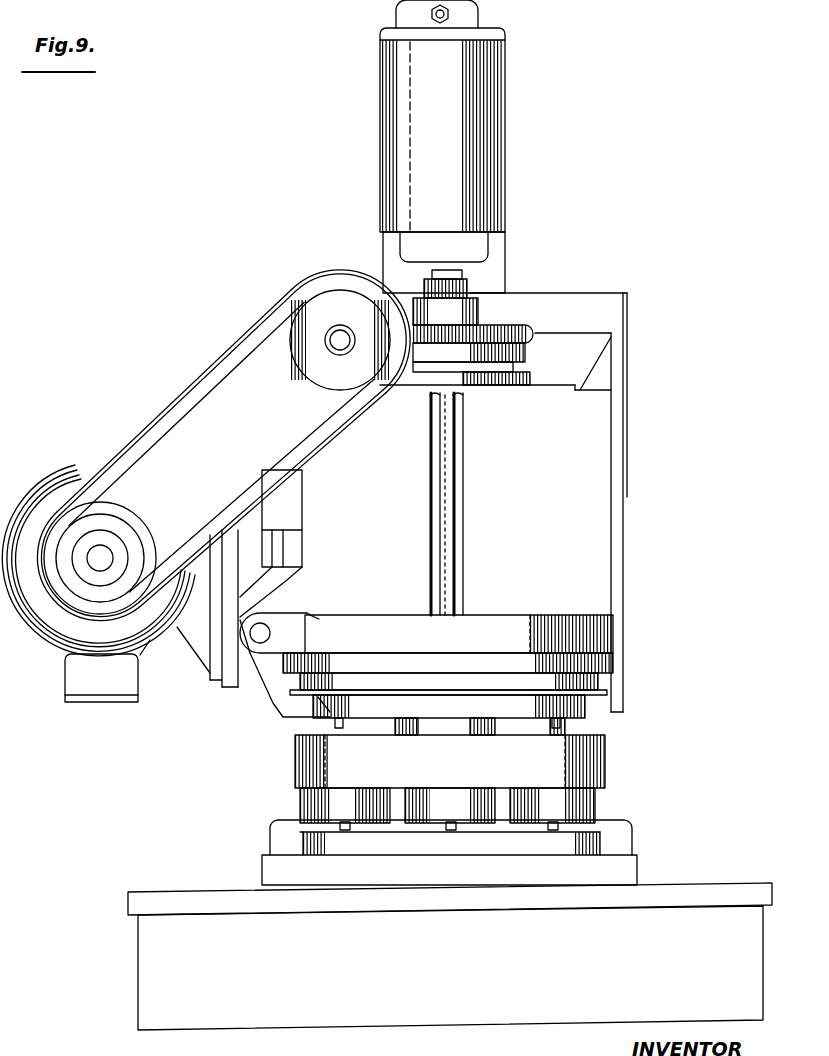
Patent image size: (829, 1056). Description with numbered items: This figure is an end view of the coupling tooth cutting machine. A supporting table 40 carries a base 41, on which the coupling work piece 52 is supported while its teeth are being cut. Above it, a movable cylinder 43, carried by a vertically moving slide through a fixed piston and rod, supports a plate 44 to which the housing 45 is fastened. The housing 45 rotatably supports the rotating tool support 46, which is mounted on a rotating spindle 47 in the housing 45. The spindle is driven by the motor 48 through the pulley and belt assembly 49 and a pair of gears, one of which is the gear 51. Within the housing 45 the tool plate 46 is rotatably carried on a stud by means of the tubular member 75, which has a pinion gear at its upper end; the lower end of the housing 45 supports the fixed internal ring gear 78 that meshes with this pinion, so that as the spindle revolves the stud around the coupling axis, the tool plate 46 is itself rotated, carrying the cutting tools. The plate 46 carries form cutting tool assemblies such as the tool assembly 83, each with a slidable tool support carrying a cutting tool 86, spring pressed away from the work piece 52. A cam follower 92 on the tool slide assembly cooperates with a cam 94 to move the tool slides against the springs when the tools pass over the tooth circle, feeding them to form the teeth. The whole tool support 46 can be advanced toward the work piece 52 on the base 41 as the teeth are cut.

The supporting table 40 is at (155, 995).
The base 41 is at (270, 873).
The movable cylinder 43 is at (497, 135).
The plate 44 is at (610, 307).
The housing 45 is at (595, 530).
The rotating tool support 46 is at (607, 762).
The rotating spindle 47 is at (480, 310).
The motor 48 is at (50, 477).
The pulley and belt assembly 49 is at (192, 418).
The gear 51 is at (533, 327).
The work piece 52 is at (598, 840).
The tubular member 75 is at (498, 725).
The internal ring gear 78 is at (322, 700).
The form cutting tool assembly 83 is at (443, 812).
The cutting tool 86 is at (457, 825).
The cam follower 92 is at (570, 725).
The cam 94 is at (383, 722).